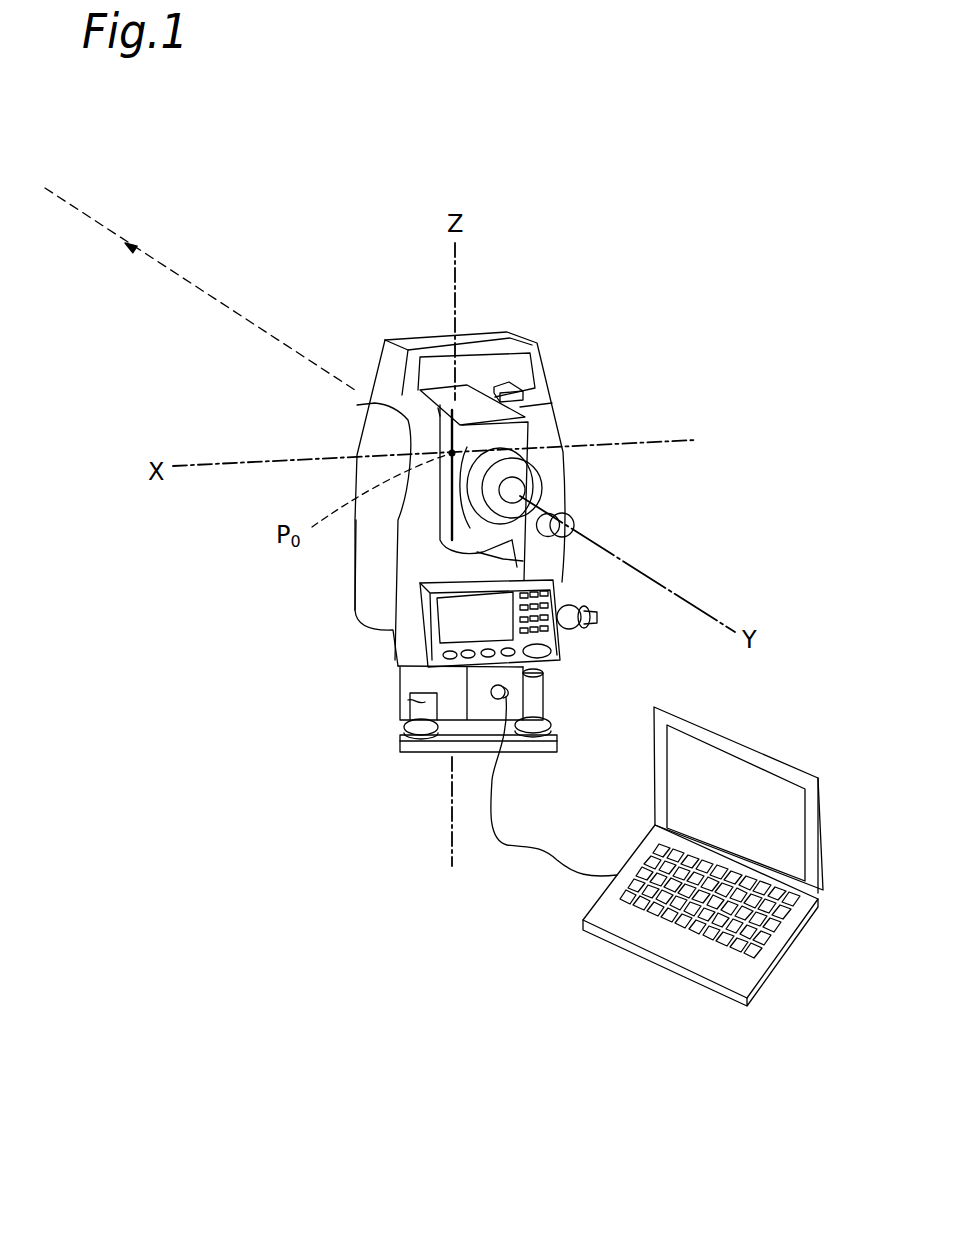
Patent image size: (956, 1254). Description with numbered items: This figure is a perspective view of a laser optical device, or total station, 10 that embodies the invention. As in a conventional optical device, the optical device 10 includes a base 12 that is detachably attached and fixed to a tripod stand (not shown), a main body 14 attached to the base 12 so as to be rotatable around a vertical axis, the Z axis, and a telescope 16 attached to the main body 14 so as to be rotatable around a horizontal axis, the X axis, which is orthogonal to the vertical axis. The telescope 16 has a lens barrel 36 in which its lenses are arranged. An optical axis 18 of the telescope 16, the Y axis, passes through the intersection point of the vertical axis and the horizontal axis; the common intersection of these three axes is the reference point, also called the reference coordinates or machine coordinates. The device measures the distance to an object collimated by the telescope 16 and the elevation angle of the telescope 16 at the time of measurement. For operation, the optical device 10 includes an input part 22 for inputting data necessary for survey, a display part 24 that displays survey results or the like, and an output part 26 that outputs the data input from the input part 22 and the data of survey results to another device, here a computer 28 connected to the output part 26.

The laser optical device (total station) 10 is at (548, 357).
The base 12 is at (407, 752).
The main body 14 is at (370, 602).
The telescope 16 is at (517, 435).
The optical axis (Y axis) 18 is at (304, 354).
The input part 22 is at (527, 602).
The display part 24 is at (443, 622).
The output part 26 is at (512, 693).
The computer 28 is at (698, 985).
The lens barrel 36 is at (440, 397).